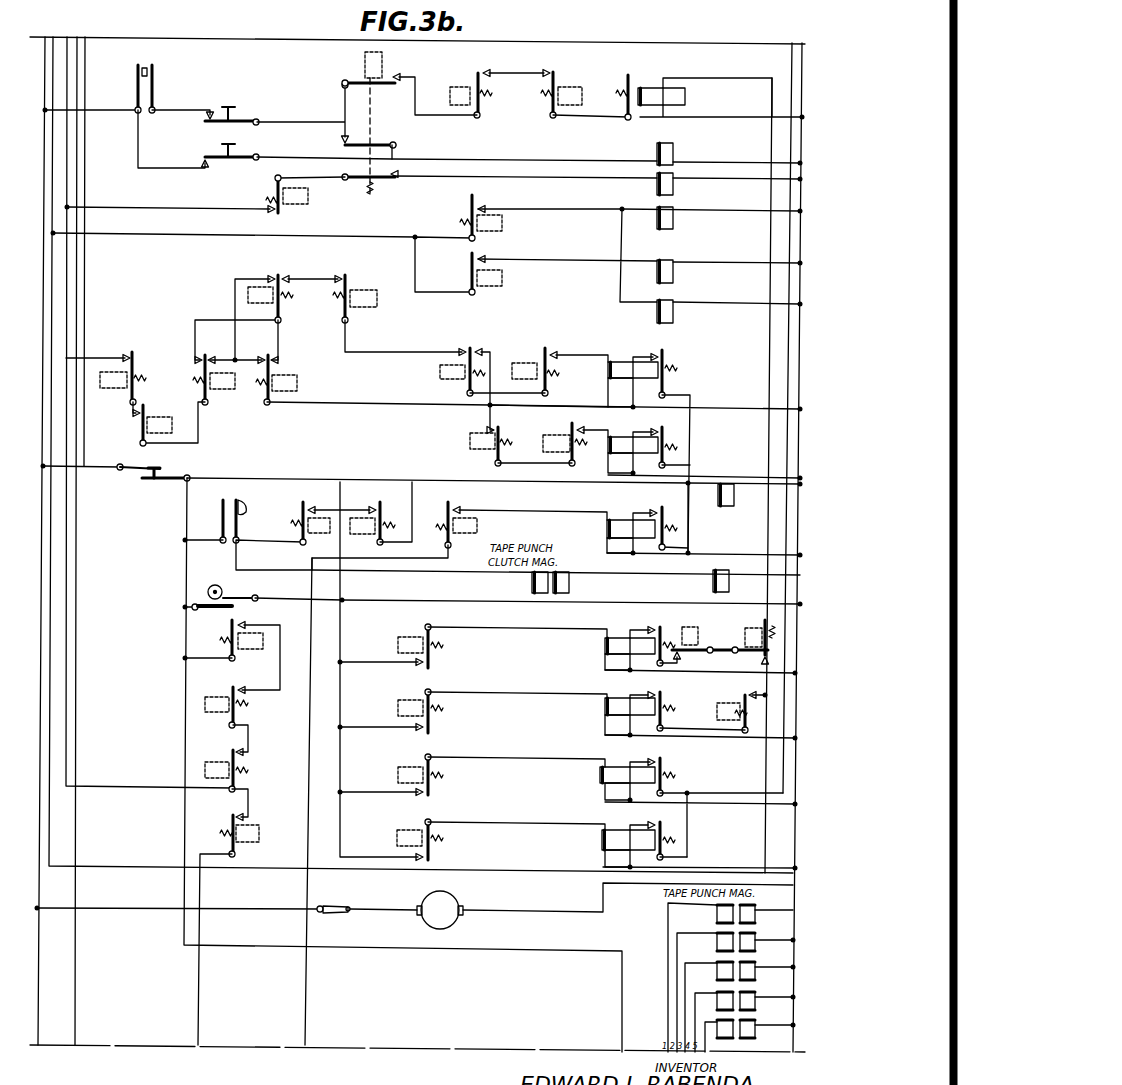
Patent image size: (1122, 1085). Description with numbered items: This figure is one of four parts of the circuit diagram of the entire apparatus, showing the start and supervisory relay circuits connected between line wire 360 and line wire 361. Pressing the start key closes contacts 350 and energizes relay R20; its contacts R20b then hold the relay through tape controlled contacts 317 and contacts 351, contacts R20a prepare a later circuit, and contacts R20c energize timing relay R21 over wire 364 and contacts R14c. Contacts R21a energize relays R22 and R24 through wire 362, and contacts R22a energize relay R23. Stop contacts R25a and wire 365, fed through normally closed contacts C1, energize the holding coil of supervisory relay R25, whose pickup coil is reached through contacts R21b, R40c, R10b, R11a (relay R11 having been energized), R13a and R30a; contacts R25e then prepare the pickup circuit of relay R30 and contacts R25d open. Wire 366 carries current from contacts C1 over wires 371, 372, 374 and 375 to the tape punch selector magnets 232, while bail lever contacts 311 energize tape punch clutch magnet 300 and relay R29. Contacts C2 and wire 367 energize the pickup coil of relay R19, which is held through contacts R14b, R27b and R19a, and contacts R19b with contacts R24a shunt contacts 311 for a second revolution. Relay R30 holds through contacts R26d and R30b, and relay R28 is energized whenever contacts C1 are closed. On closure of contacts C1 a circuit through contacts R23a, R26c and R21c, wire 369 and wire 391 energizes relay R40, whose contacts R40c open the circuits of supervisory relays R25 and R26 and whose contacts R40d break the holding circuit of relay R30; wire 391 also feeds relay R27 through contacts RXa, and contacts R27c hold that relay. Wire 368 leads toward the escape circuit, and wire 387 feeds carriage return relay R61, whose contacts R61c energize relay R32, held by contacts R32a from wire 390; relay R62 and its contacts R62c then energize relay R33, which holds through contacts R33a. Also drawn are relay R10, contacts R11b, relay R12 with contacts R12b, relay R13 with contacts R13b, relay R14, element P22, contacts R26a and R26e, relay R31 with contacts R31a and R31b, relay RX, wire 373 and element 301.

The tape controlled contacts 317 is at (148, 66).
The start key contacts 350 is at (211, 164).
The start key contacts 351 is at (206, 119).
The line wire 360 is at (45, 78).
The line wire 361 is at (802, 101).
The wire 362 is at (56, 258).
The wire 364 is at (67, 282).
The wire 365 is at (270, 480).
The wire 366 is at (622, 990).
The wire 367 is at (445, 596).
The wire 368 is at (66, 523).
The wire 369 is at (198, 980).
The wire 371 is at (668, 908).
The wire 372 is at (677, 941).
The line 373 is at (686, 977).
The wire 374 is at (696, 999).
The wire 375 is at (700, 1033).
The wire 387 is at (85, 163).
The wire 390 is at (792, 60).
The wire 391 is at (305, 1004).
The tape punch clutch magnet 300 is at (557, 585).
The motor 301 is at (425, 895).
The bail lever contacts 311 is at (226, 500).
The tape punch selector magnets 232 is at (722, 916).
The normally closed contacts C1 is at (165, 470).
The contacts C2 is at (238, 597).
The relay coil R10 is at (223, 392).
The contacts R10b is at (205, 352).
The relay R11 is at (365, 292).
The contacts R11a is at (266, 352).
The relay contact R11b is at (345, 268).
The relay coil R12 is at (247, 294).
The relay contact R12b is at (276, 274).
The relay coil R13 is at (440, 372).
The contacts R13a is at (469, 347).
The relay contact R13b is at (500, 427).
The relay coil R14 is at (308, 200).
The contacts R14b is at (500, 70).
The contacts R14c is at (280, 213).
The relay R19 is at (648, 90).
The contacts R19a is at (640, 64).
The contacts R19b is at (382, 502).
The relay R20 is at (365, 65).
The contacts R20a is at (398, 88).
The contacts R20b is at (340, 140).
The contacts R20c is at (398, 177).
The timing relay R21 is at (503, 222).
The contacts R21a is at (479, 205).
The contacts R21b is at (130, 352).
The contacts R21c is at (233, 815).
The relay R22 is at (673, 219).
The contacts R22a is at (482, 262).
The relay coil P22 is at (502, 277).
The relay R23 is at (673, 271).
The contacts R23a is at (243, 627).
The relay R24 is at (673, 312).
The contacts R24a is at (300, 503).
The supervisory relay R25 is at (215, 713).
The stop contacts R25a is at (666, 351).
The contacts R25d is at (228, 690).
The contacts R25e is at (428, 668).
The supervisory relay R26 is at (217, 763).
The relay contact R26a is at (668, 429).
The contacts R26c is at (243, 752).
The contacts R26d is at (751, 630).
The relay contact R26e is at (428, 733).
The relay R27 is at (582, 82).
The contacts R27b is at (563, 82).
The contacts R27c is at (655, 512).
The relay R28 is at (726, 508).
The relay R29 is at (713, 587).
The relay R30 is at (615, 640).
The contacts R30a is at (560, 335).
The contacts R30b is at (655, 625).
The relay coil R31 is at (607, 712).
The relay contact R31a is at (578, 418).
The relay contact R31b is at (648, 693).
The relay R32 is at (615, 768).
The contacts R32a is at (656, 762).
The relay R33 is at (605, 840).
The holding contacts R33a is at (648, 823).
The relay R40 is at (160, 417).
The contacts R40c is at (137, 435).
The contacts R40d is at (720, 661).
The carriage return relay R61 is at (405, 766).
The contacts R61c is at (428, 795).
The relay R62 is at (400, 829).
The contacts R62c is at (428, 860).
The relay coil RX is at (477, 526).
The contacts RXa is at (452, 496).